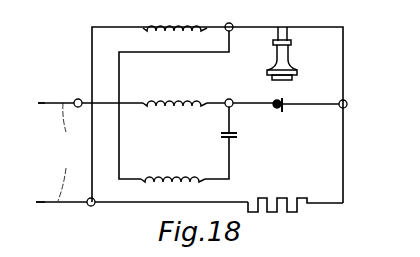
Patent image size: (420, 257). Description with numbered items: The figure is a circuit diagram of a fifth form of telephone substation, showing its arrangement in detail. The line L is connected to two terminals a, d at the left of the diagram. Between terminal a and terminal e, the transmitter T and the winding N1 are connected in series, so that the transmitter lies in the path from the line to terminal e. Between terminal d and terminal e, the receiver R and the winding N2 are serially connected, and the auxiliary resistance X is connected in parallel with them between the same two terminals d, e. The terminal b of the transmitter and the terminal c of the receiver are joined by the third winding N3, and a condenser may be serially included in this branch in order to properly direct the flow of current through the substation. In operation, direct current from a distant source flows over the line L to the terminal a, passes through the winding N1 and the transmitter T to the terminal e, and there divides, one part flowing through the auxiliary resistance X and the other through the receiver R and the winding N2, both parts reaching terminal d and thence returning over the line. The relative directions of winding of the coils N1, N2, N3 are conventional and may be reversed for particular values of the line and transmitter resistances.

The terminal a is at (76, 94).
The terminal b is at (227, 94).
The terminal c is at (228, 18).
The terminal d is at (94, 209).
The terminal e is at (349, 104).
The winding N1 is at (175, 90).
The winding N2 is at (175, 18).
The winding N3 is at (173, 166).
The receiver R is at (289, 53).
The transmitter T is at (285, 112).
The auxiliary resistance X is at (295, 194).
The line L is at (51, 152).